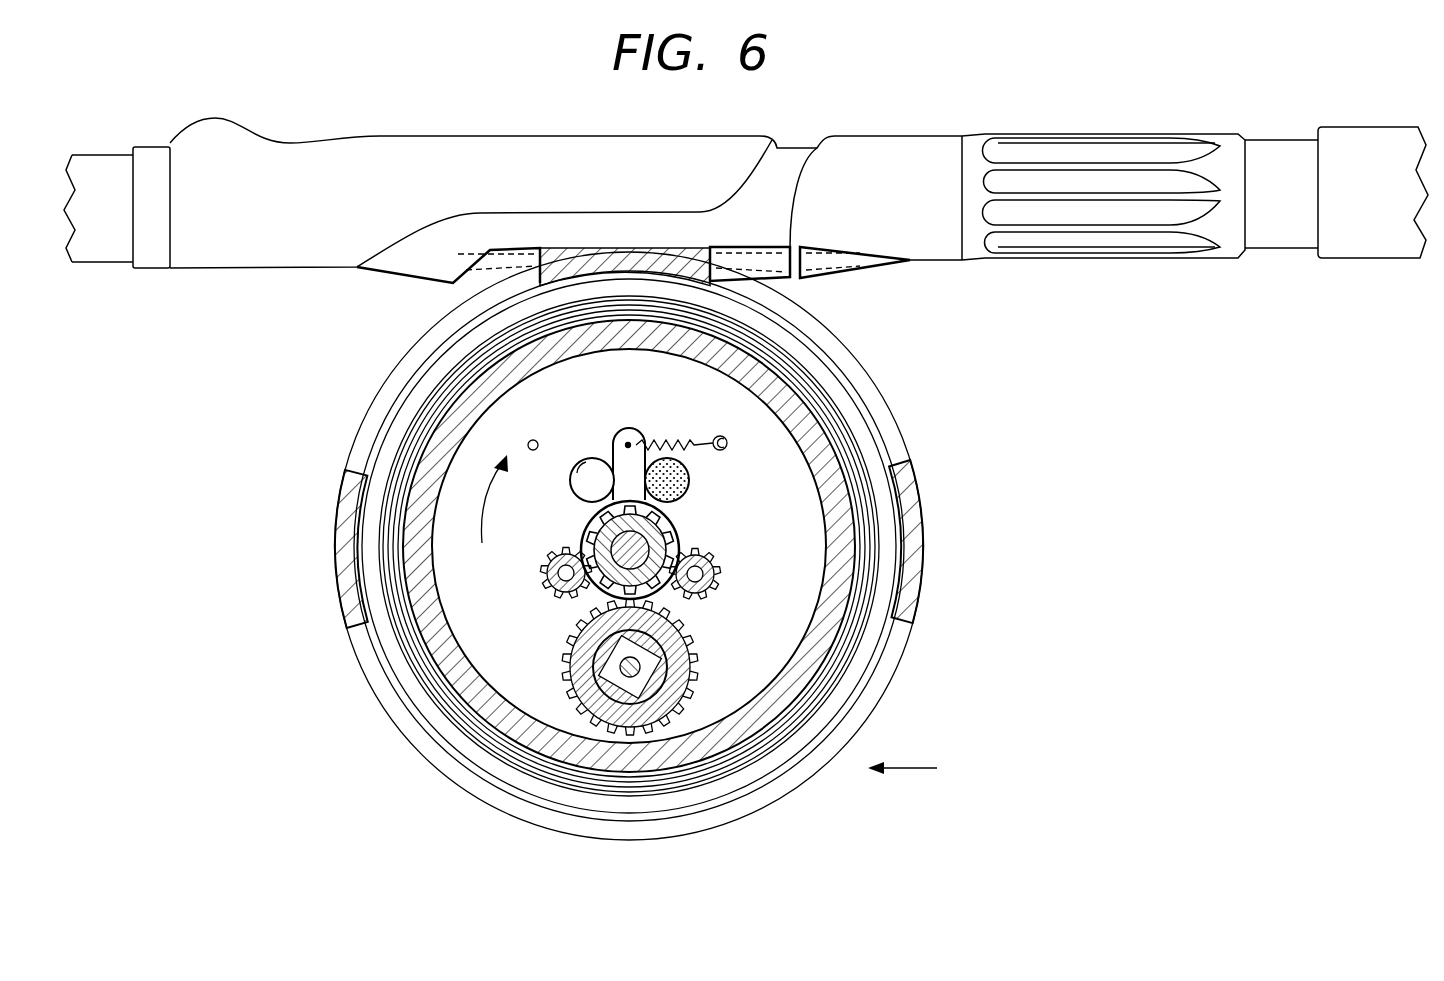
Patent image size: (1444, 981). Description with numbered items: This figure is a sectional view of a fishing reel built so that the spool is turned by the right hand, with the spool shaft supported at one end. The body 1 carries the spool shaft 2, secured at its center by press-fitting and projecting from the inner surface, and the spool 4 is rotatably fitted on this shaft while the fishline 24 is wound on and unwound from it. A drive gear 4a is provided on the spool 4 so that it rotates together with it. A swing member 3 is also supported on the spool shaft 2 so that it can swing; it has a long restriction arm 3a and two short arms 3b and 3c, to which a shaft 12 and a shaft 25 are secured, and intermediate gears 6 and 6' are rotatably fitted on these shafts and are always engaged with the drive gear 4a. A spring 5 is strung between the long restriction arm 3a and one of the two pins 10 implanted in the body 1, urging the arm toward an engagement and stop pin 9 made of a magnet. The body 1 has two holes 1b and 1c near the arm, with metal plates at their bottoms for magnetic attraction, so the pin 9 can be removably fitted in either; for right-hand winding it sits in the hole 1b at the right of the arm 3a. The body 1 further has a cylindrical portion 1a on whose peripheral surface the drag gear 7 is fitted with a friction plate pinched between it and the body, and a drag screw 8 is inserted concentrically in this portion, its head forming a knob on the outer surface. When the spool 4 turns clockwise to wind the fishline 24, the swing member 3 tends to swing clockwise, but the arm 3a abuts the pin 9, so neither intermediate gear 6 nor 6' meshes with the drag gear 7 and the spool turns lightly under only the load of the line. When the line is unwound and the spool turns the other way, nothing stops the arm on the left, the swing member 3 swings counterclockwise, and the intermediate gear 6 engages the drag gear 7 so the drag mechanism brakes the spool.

The body 1 is at (345, 475).
The cylindrical portion 1a is at (703, 682).
The hole 1b is at (851, 482).
The hole 1c is at (574, 470).
The spool shaft 2 is at (799, 550).
The swing member 3 is at (648, 404).
The long restriction arm 3a is at (641, 428).
The short arm 3b is at (558, 578).
The short arm 3c is at (703, 575).
The spool 4 is at (420, 712).
The drive gear 4a is at (672, 538).
The spring 5 is at (689, 440).
The intermediate gear 6 is at (429, 629).
The intermediate gear 6' is at (842, 603).
The drag gear 7 is at (760, 671).
The drag screw 8 is at (670, 670).
The engagement and stop pin 9 is at (689, 487).
The pin 10 is at (528, 444).
The shaft 12 is at (548, 585).
The fishline 24 is at (908, 792).
The shaft 25 is at (727, 600).